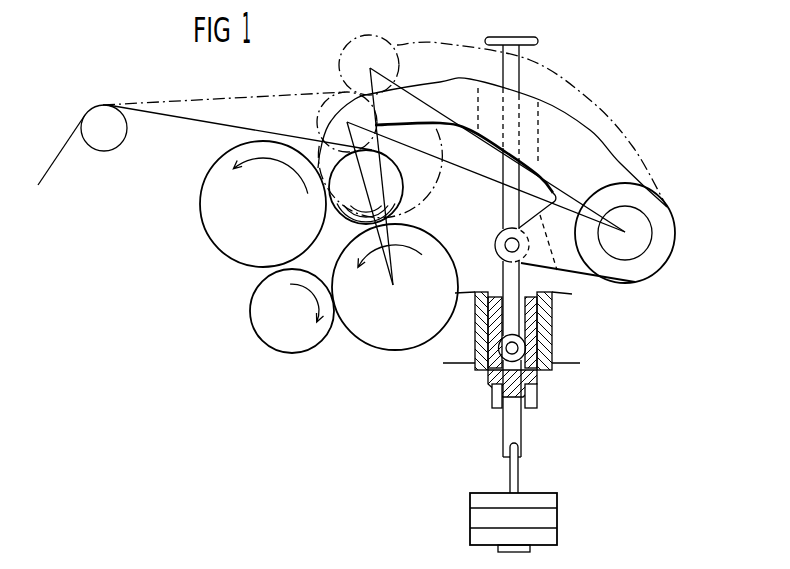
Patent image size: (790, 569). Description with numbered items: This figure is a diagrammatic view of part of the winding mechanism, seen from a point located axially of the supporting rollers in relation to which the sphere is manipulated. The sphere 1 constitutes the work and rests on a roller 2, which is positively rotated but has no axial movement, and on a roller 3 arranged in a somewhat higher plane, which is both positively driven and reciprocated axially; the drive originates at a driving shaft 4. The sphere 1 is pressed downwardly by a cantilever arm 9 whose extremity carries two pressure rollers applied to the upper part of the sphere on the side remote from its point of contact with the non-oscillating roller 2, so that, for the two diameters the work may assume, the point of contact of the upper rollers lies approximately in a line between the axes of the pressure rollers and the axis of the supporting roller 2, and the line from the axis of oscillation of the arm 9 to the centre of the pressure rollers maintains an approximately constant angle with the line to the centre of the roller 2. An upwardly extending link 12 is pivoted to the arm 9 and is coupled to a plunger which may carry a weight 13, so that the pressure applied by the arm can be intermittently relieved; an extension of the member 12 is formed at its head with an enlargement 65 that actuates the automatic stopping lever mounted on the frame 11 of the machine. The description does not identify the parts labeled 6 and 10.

The sphere 1 is at (366, 187).
The roller 2 is at (395, 287).
The roller 3 is at (263, 204).
The driving shaft 4 is at (292, 311).
The belt 6 is at (242, 100).
The cantilever arm 9 is at (492, 160).
The pivot 10 is at (625, 233).
The frame 11 is at (525, 350).
The link 12 is at (507, 262).
The weight 13 is at (566, 480).
The enlargement 65 is at (536, 40).